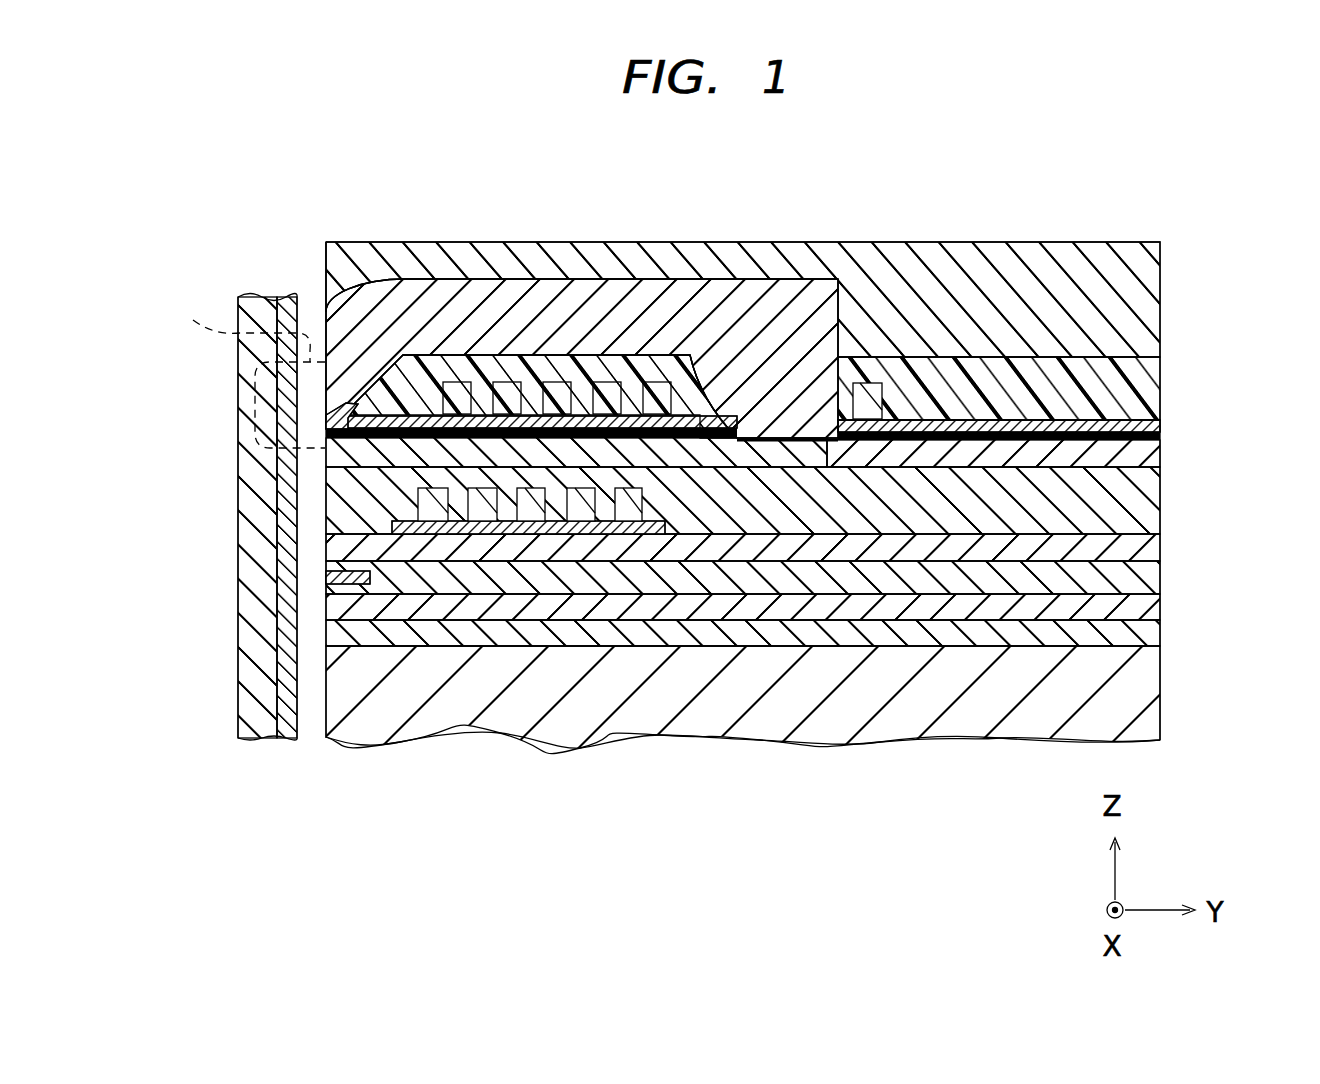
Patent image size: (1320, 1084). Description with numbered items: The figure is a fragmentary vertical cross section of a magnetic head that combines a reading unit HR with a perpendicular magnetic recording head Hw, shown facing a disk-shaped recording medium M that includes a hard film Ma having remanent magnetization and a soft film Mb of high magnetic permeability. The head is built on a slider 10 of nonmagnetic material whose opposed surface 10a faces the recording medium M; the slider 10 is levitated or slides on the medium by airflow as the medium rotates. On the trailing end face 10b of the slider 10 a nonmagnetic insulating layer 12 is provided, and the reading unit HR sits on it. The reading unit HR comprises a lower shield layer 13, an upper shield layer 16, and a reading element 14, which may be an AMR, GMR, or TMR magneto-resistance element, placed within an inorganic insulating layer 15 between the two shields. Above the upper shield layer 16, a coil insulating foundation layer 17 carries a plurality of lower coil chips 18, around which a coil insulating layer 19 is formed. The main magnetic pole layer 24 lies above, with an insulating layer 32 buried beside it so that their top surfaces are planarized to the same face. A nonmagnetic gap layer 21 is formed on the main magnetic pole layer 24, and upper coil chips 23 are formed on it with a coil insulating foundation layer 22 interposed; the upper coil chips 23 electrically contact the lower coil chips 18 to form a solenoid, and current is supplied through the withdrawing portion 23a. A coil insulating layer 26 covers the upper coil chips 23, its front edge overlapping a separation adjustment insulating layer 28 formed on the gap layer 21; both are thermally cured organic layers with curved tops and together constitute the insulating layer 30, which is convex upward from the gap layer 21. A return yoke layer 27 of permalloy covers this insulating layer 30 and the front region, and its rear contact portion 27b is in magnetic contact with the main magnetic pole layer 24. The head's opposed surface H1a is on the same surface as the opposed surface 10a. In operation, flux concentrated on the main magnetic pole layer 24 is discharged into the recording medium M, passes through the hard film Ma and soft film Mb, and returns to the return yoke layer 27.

The slider 10 is at (1001, 738).
The opposed surface 10a is at (323, 700).
The trailing end face 10b is at (658, 648).
The nonmagnetic insulating layer 12 is at (338, 631).
The lower shield layer 13 is at (338, 607).
The reading element 14 is at (338, 574).
The inorganic insulating layer 15 is at (921, 595).
The upper shield layer 16 is at (338, 542).
The coil insulating foundation layer 17 is at (534, 536).
The lower coil chip 18 is at (500, 485).
The coil insulating layer 19 is at (345, 508).
The nonmagnetic gap layer 21 is at (330, 426).
The coil insulating foundation layer 22 is at (714, 400).
The upper coil chip 23 is at (553, 380).
The withdrawing portion 23a is at (868, 385).
The main magnetic pole layer 24 is at (327, 453).
The coil insulating layer 26 is at (420, 362).
The return yoke layer 27 is at (632, 300).
The contact portion 27b is at (778, 403).
The separation adjustment insulating layer 28 is at (343, 418).
The insulating layer 30 is at (466, 265).
The insulating layer 32 is at (1160, 447).
The recording medium M is at (238, 745).
The hard film Ma is at (287, 715).
The soft film Mb is at (265, 700).
The opposed surface H1a is at (323, 290).
The perpendicular magnetic recording head Hw is at (1172, 242).
The reading unit HR is at (1172, 530).